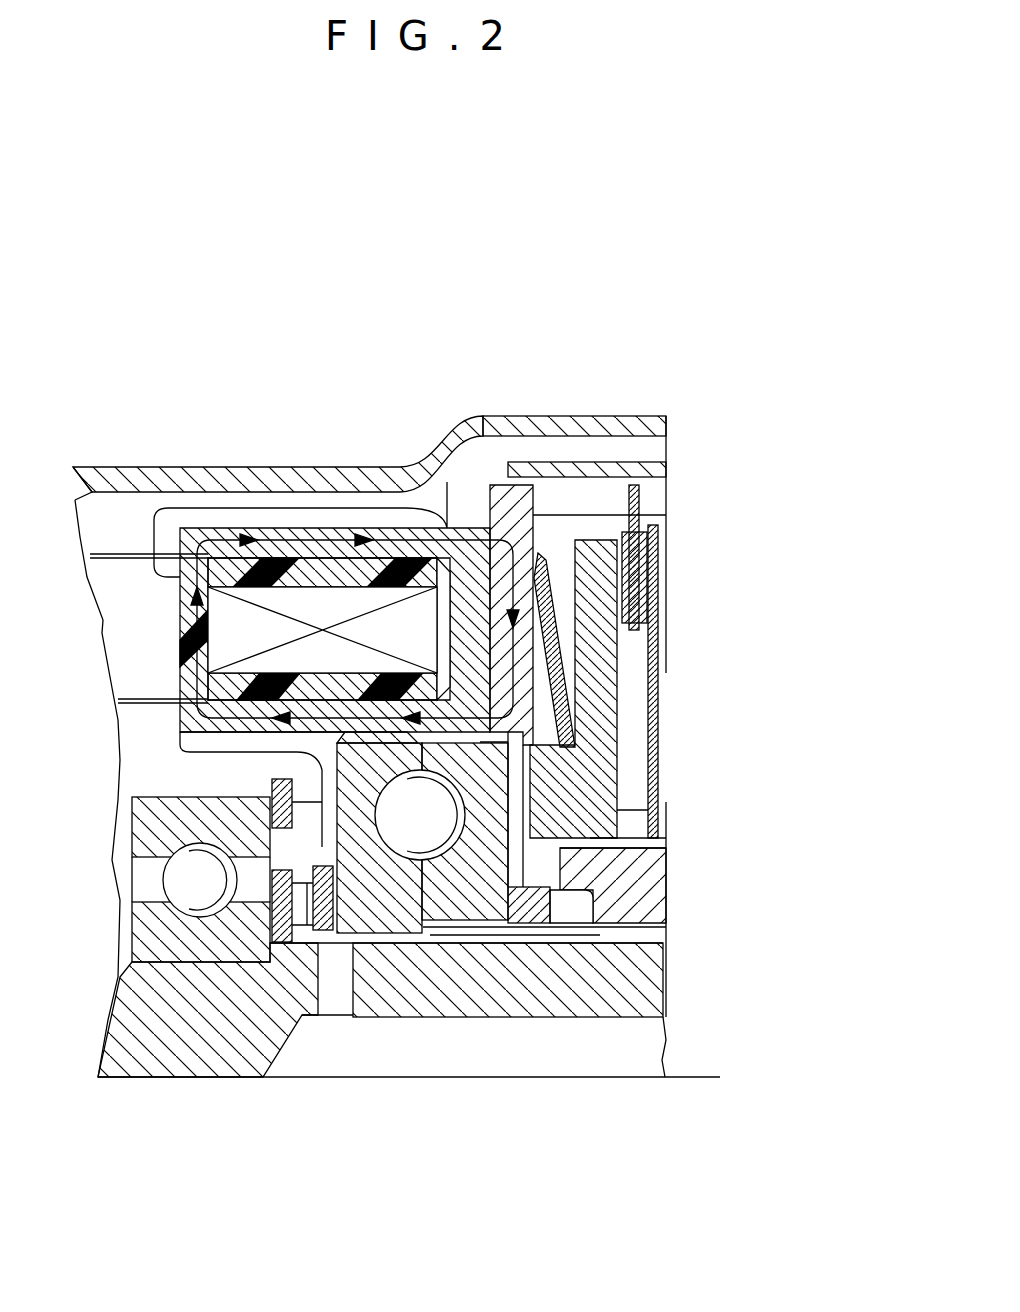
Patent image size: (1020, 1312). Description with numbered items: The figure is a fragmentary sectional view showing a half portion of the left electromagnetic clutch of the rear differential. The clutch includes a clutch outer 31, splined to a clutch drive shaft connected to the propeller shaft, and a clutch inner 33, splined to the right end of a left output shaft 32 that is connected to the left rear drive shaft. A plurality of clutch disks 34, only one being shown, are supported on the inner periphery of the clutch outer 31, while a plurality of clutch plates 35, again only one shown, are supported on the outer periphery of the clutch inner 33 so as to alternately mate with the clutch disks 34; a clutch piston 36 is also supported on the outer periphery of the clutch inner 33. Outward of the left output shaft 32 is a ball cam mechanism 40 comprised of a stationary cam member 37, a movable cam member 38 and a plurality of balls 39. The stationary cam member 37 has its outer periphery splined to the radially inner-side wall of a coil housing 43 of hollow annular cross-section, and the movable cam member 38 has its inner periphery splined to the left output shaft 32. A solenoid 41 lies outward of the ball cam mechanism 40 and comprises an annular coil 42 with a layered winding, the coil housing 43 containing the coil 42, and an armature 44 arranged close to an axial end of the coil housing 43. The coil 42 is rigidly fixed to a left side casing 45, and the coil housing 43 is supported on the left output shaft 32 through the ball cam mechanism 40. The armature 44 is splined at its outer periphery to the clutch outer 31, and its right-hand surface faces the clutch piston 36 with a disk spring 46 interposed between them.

The clutch outer 31 is at (597, 428).
The left output shaft 32 is at (193, 1065).
The clutch inner 33 is at (650, 875).
The clutch disk 34 is at (640, 502).
The clutch plate 35 is at (662, 703).
The clutch piston 36 is at (607, 785).
The stationary cam member 37 is at (372, 922).
The movable cam member 38 is at (492, 902).
The ball 39 is at (427, 833).
The ball cam mechanism 40 is at (394, 963).
The solenoid 41 is at (333, 508).
The annular coil 42 is at (293, 598).
The coil housing 43 is at (243, 533).
The armature 44 is at (497, 505).
The left side casing 45 is at (140, 478).
The disk spring 46 is at (545, 553).